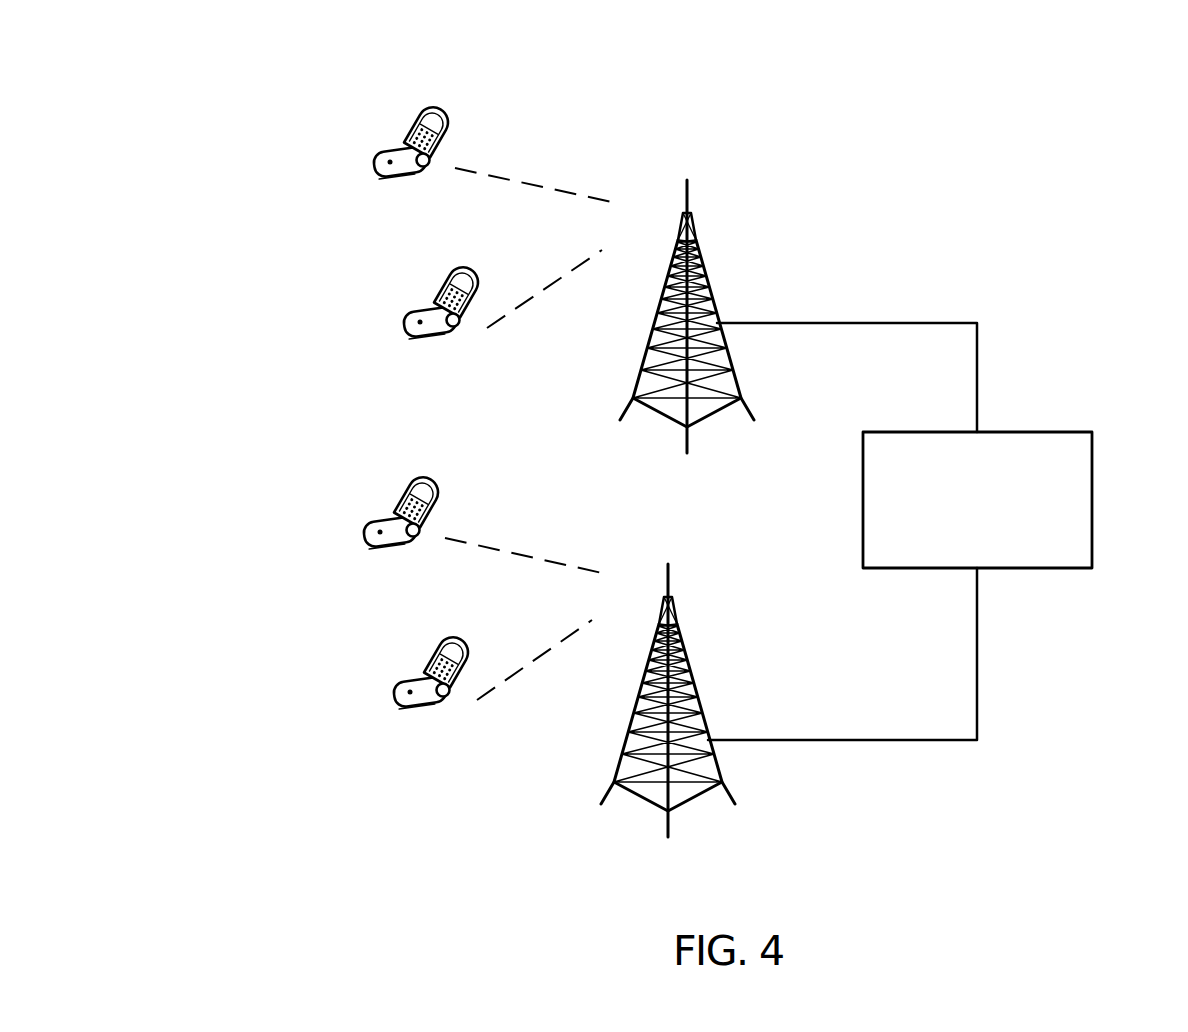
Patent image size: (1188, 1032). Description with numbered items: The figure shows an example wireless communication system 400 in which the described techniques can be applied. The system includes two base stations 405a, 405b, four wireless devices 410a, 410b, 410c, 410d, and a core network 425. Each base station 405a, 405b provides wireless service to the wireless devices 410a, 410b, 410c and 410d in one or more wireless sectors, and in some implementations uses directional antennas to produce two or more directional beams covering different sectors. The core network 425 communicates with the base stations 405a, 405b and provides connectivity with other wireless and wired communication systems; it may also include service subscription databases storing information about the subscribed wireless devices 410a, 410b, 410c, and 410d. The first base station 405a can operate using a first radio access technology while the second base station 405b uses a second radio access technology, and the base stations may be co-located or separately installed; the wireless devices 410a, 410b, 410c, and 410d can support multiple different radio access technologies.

The wireless communication system 400 is at (247, 238).
The base station 405a is at (798, 323).
The base station 405b is at (789, 711).
The wireless device 410a is at (492, 140).
The wireless device 410b is at (502, 282).
The wireless device 410c is at (482, 509).
The wireless device 410d is at (492, 656).
The core network 425 is at (977, 479).